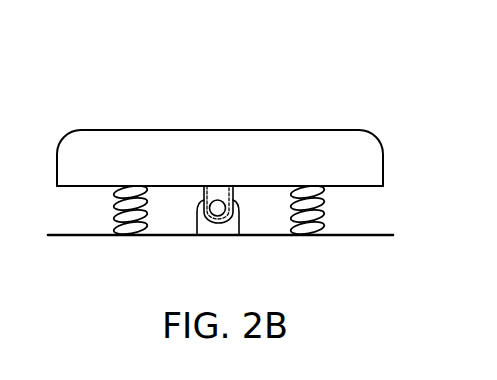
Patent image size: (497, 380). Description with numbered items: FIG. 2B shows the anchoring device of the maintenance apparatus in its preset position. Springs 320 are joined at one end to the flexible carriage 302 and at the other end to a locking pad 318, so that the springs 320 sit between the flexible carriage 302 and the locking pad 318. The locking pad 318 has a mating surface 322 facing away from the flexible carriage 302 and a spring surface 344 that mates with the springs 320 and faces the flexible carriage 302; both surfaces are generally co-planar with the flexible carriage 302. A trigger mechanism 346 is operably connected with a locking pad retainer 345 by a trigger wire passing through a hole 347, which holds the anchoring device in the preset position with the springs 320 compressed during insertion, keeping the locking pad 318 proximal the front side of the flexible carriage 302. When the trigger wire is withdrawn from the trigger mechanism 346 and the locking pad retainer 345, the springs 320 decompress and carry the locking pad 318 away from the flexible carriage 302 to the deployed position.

The flexible carriage 302 is at (380, 235).
The locking pad 318 is at (318, 76).
The springs 320 is at (114, 216).
The mating surface 322 is at (228, 130).
The spring surface 344 is at (375, 196).
The locking pad retainer 345 is at (203, 197).
The trigger mechanism 346 is at (238, 221).
The hole 347 is at (211, 222).